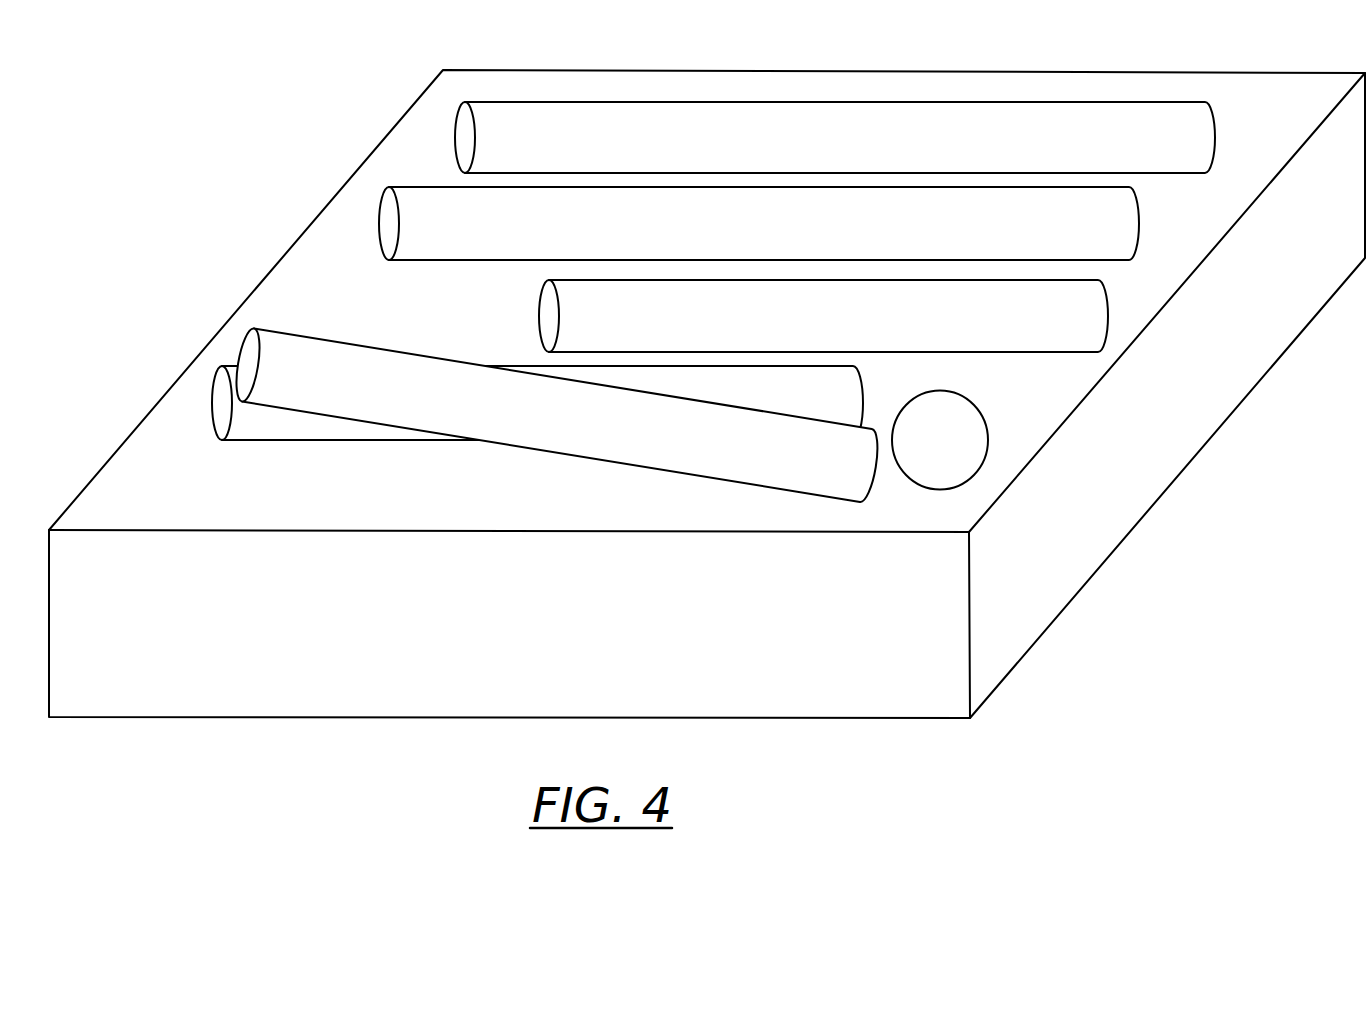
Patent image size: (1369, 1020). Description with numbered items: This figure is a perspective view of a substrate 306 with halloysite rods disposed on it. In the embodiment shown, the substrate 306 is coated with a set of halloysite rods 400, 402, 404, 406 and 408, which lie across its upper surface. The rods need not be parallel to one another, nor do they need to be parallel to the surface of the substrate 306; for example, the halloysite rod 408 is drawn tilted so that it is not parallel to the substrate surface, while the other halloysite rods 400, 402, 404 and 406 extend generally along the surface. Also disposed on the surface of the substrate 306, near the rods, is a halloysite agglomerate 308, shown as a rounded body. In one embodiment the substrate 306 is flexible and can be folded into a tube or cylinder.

The substrate 306 is at (1029, 582).
The halloysite agglomerate 308 is at (940, 439).
The halloysite rod 400 is at (835, 137).
The halloysite rod 402 is at (759, 223).
The halloysite rod 404 is at (823, 316).
The halloysite rod 406 is at (537, 403).
The halloysite rod 408 is at (557, 415).